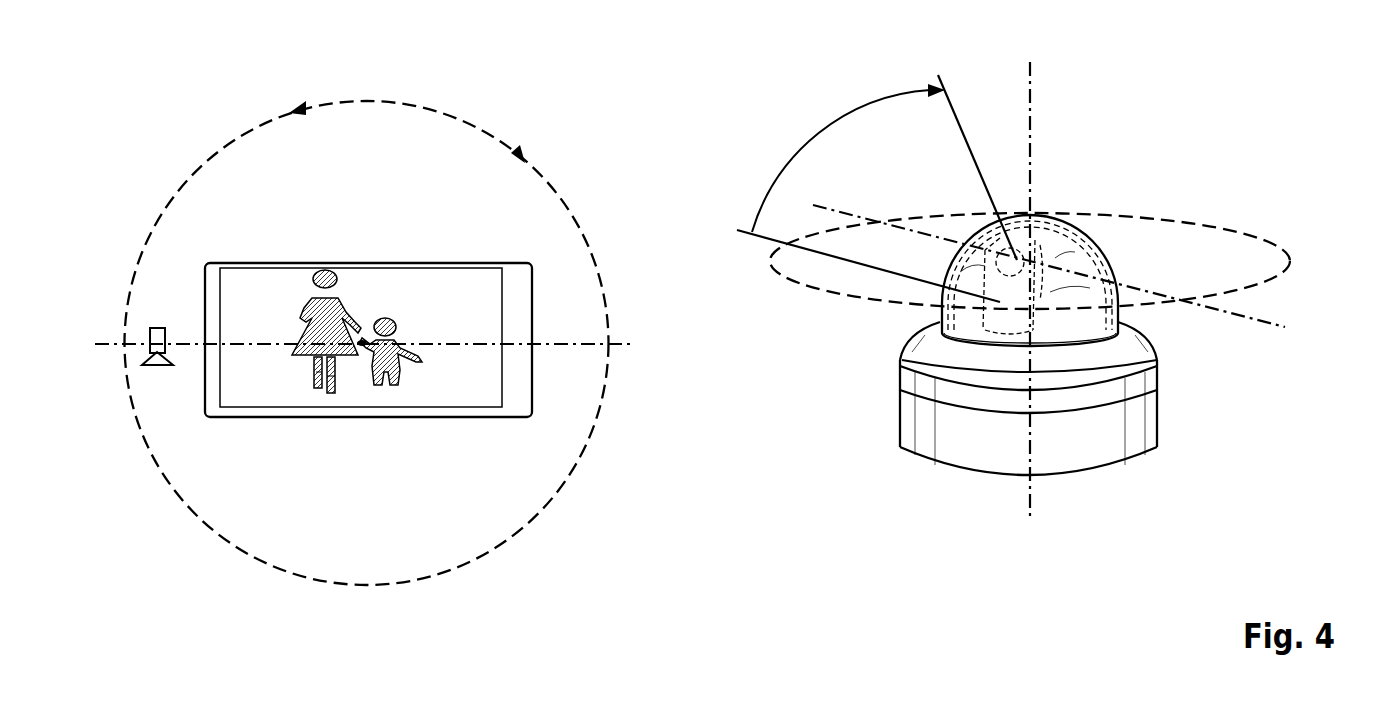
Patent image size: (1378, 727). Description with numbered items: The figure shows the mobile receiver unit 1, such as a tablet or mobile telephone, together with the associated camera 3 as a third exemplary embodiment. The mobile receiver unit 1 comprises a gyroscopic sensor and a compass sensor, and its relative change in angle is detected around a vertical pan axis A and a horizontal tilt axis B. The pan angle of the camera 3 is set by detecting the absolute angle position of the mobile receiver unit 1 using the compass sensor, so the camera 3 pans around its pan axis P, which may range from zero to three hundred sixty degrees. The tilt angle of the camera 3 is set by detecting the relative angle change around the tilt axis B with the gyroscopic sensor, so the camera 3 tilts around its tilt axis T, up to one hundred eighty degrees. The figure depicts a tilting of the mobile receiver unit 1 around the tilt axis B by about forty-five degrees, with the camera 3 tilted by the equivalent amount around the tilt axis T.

The mobile receiver unit 1 is at (143, 96).
The camera 3 is at (1160, 132).
The pan axis A is at (357, 331).
The tilt axis B is at (395, 340).
The pan axis P is at (1043, 288).
The tilt axis T is at (1061, 276).